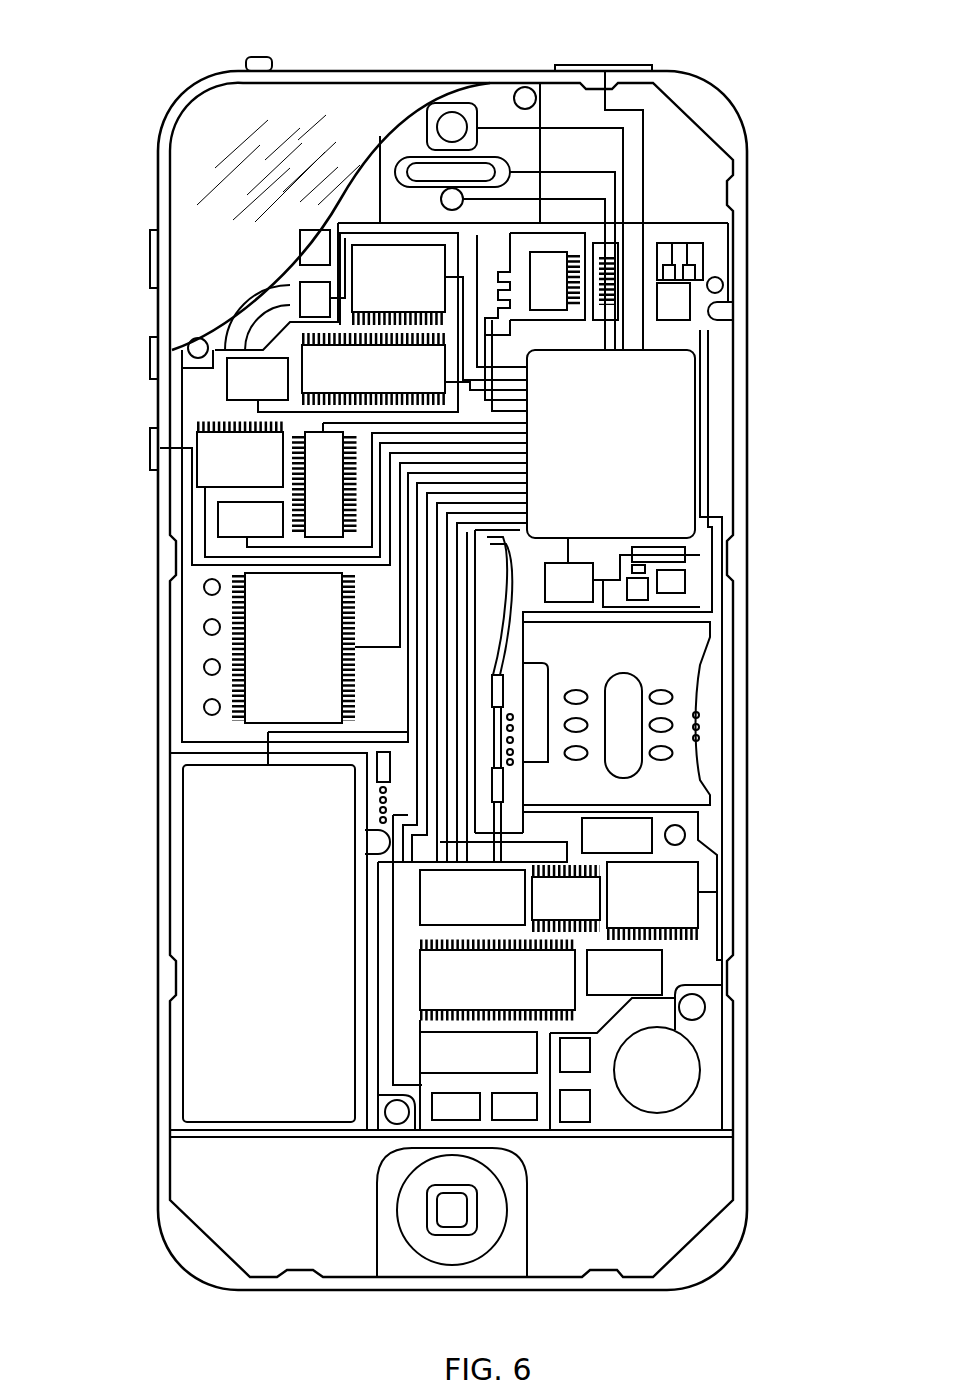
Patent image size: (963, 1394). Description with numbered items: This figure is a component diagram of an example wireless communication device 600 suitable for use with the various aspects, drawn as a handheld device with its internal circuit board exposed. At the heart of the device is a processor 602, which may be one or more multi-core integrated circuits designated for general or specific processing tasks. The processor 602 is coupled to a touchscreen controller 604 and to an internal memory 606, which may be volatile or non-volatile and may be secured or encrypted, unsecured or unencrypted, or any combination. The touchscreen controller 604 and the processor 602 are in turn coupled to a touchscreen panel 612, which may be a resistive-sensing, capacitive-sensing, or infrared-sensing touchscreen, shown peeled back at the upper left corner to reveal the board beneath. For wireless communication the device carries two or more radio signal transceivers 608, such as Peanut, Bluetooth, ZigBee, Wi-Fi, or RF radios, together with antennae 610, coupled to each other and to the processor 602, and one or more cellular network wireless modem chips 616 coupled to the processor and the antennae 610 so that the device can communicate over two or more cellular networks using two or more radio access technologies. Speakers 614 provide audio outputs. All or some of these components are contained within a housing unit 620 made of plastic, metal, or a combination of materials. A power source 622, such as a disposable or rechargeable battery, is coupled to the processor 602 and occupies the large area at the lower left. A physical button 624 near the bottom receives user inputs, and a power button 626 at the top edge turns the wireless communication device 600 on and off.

The wireless communication device 600 is at (112, 62).
The processor 602 is at (588, 457).
The touchscreen controller 604 is at (378, 292).
The internal memory 606 is at (350, 383).
The radio signal transceivers 608 is at (632, 262).
The antennae 610 is at (690, 298).
The touchscreen panel 612 is at (202, 172).
The speakers 614 is at (400, 160).
The cellular network wireless modem chip 616 is at (475, 994).
The housing unit 620 is at (747, 1162).
The power source 622 is at (246, 954).
The physical button 624 is at (492, 1218).
The power button 626 is at (607, 66).